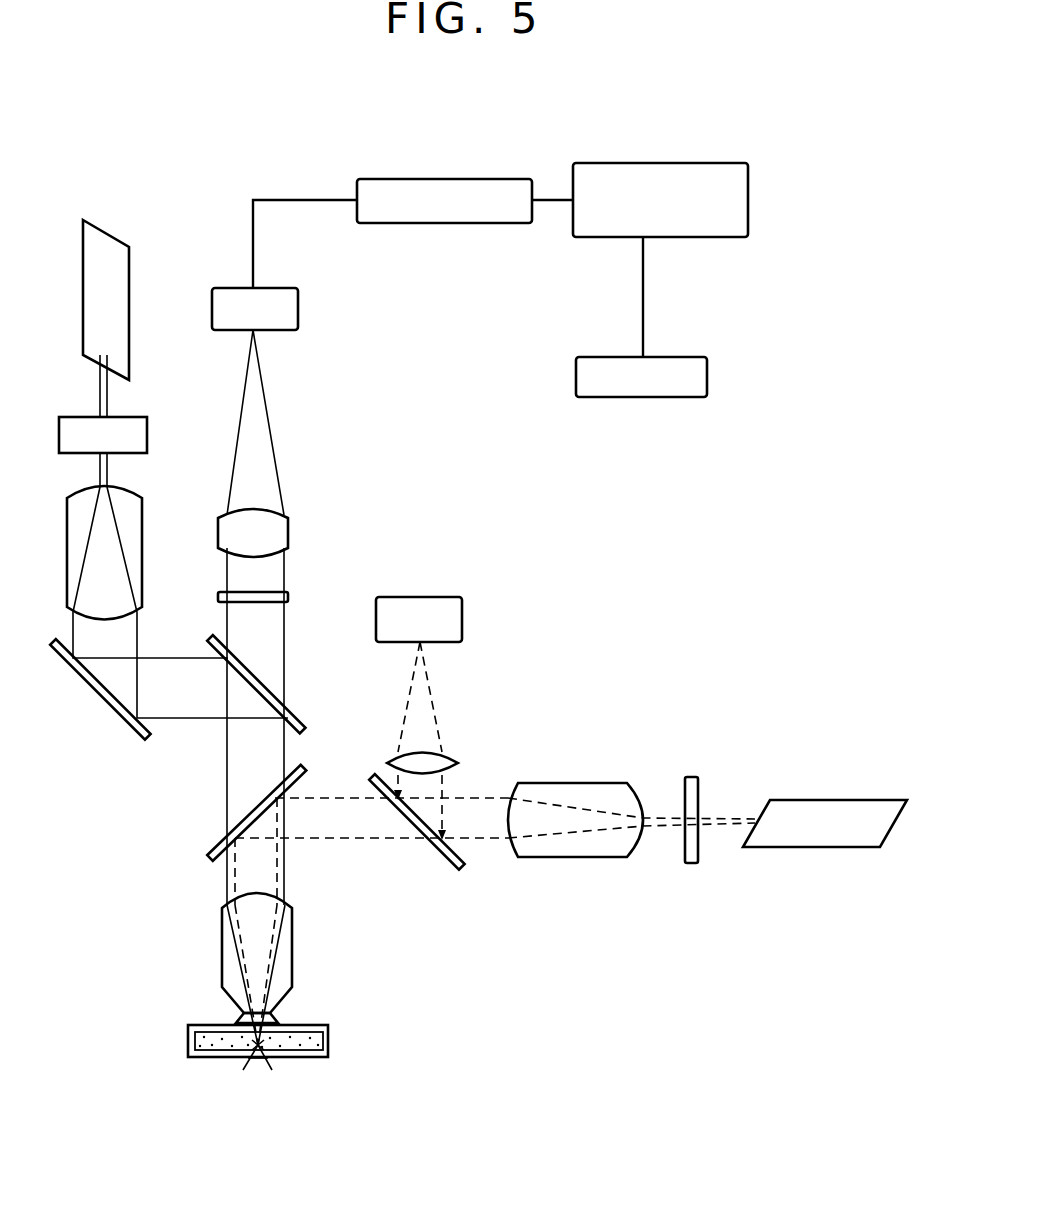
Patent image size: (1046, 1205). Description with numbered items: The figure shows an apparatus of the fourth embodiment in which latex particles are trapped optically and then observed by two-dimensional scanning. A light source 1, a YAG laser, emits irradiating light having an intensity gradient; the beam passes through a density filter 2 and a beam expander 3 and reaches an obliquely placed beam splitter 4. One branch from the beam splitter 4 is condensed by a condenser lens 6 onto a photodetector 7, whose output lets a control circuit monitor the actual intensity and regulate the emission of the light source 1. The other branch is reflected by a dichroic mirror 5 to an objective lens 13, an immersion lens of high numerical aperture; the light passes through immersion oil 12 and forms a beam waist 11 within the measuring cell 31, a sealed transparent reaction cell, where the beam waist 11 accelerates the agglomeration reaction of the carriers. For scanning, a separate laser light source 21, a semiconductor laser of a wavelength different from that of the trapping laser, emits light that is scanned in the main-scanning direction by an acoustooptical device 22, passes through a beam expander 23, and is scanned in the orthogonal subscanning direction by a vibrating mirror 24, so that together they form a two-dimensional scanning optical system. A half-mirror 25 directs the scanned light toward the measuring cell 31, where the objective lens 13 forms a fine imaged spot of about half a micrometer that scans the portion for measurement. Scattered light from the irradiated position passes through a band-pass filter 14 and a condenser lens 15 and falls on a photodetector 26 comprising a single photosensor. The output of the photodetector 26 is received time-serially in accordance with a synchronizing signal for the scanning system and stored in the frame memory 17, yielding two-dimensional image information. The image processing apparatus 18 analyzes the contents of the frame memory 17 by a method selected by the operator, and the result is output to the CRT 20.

The light source 1 is at (795, 800).
The density filter 2 is at (693, 777).
The beam expander 3 is at (598, 783).
The beam splitter 4 is at (446, 862).
The dichroic mirror 5 is at (298, 773).
The condenser lens 6 is at (448, 760).
The photodetector 7 is at (462, 612).
The beam waist 11 is at (250, 1050).
The immersion oil 12 is at (278, 1018).
The objective lens 13 is at (293, 906).
The band-pass filter 14 is at (288, 597).
The condenser lens 15 is at (288, 522).
The frame memory 17 is at (479, 178).
The image processing apparatus 18 is at (688, 163).
The CRT 20 is at (683, 357).
The laser light source 21 is at (129, 325).
The acoustooptical device 22 is at (147, 440).
The beam expander 23 is at (142, 537).
The vibrating mirror 24 is at (105, 700).
The half-mirror 25 is at (302, 718).
The photodetector 26 is at (298, 310).
The measuring cell 31 is at (328, 1038).